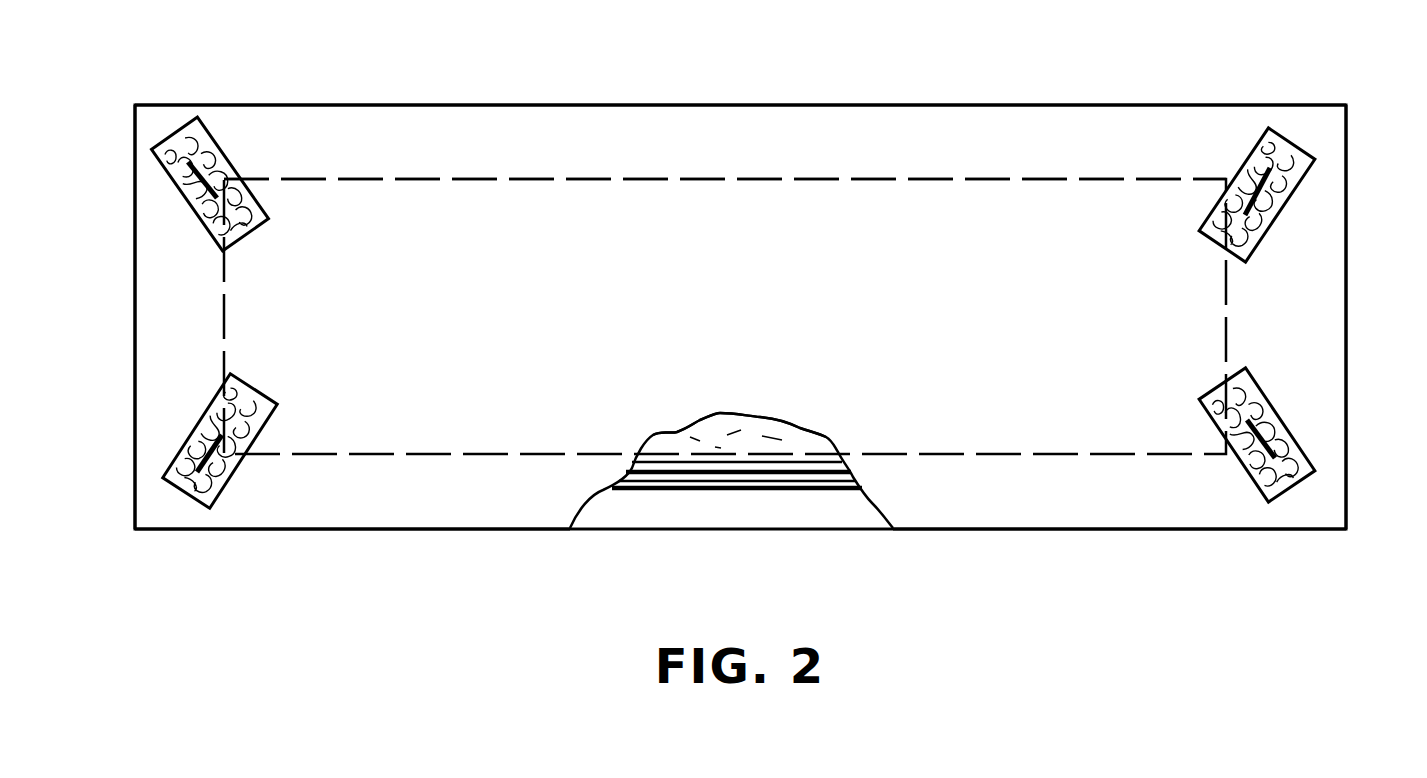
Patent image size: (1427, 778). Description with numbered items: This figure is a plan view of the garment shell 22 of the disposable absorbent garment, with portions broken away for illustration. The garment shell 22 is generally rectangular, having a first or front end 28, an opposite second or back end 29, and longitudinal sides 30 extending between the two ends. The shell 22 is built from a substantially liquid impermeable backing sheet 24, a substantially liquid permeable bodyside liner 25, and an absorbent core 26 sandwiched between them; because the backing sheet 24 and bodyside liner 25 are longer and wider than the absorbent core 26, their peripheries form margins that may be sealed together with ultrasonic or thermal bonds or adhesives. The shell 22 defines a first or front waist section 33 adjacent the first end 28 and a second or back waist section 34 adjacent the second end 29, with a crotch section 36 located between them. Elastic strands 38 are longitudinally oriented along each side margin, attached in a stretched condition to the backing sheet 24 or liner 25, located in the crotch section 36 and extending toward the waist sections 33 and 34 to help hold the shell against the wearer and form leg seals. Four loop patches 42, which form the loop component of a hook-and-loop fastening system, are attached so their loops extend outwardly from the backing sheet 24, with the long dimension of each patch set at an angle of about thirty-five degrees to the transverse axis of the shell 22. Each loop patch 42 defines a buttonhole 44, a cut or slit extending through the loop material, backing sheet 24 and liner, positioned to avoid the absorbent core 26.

The garment shell 22 is at (474, 101).
The backing sheet 24 is at (496, 339).
The bodyside liner 25 is at (648, 507).
The absorbent core 26 is at (723, 413).
The first end 28 is at (135, 307).
The second end 29 is at (1347, 304).
The longitudinal sides 30 is at (830, 105).
The first waist section 33 is at (285, 533).
The second waist section 34 is at (1185, 532).
The crotch section 36 is at (685, 220).
The elastic strands 38 is at (788, 466).
The loop patches 42 is at (177, 140).
The buttonhole 44 is at (203, 175).